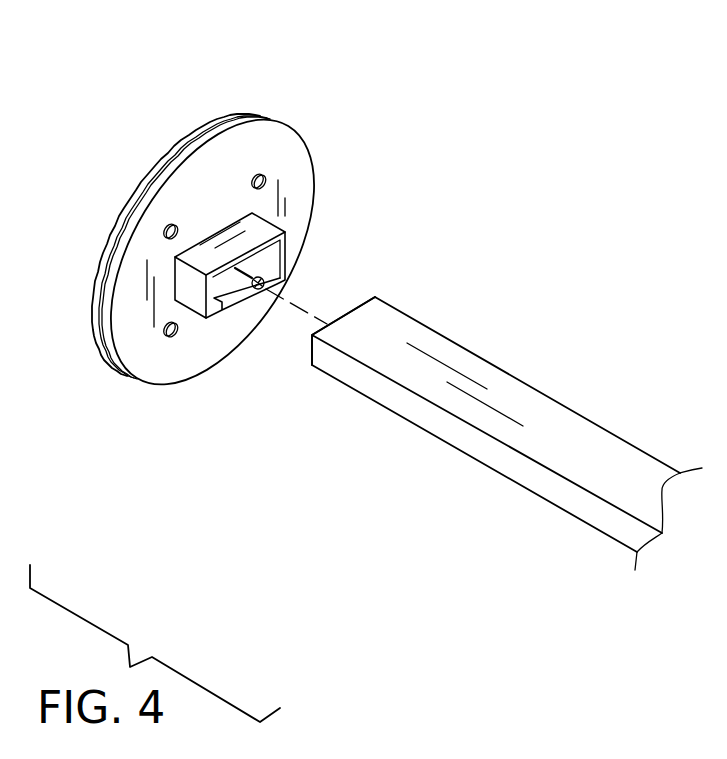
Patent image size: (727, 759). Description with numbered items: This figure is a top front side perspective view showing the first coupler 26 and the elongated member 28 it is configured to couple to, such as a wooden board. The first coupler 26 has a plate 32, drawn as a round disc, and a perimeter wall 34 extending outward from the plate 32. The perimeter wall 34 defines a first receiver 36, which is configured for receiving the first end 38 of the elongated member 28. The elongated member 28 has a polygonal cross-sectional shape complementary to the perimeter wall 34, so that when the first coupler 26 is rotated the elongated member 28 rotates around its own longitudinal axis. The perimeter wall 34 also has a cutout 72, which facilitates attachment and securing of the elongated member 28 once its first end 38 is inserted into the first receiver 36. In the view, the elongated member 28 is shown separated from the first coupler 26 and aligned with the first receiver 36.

The first coupler 26 is at (241, 234).
The plate 32 is at (302, 164).
The perimeter wall 34 is at (294, 300).
The first receiver 36 is at (286, 258).
The first end 38 is at (356, 296).
The elongated member 28 is at (507, 408).
The cutout 72 is at (248, 310).